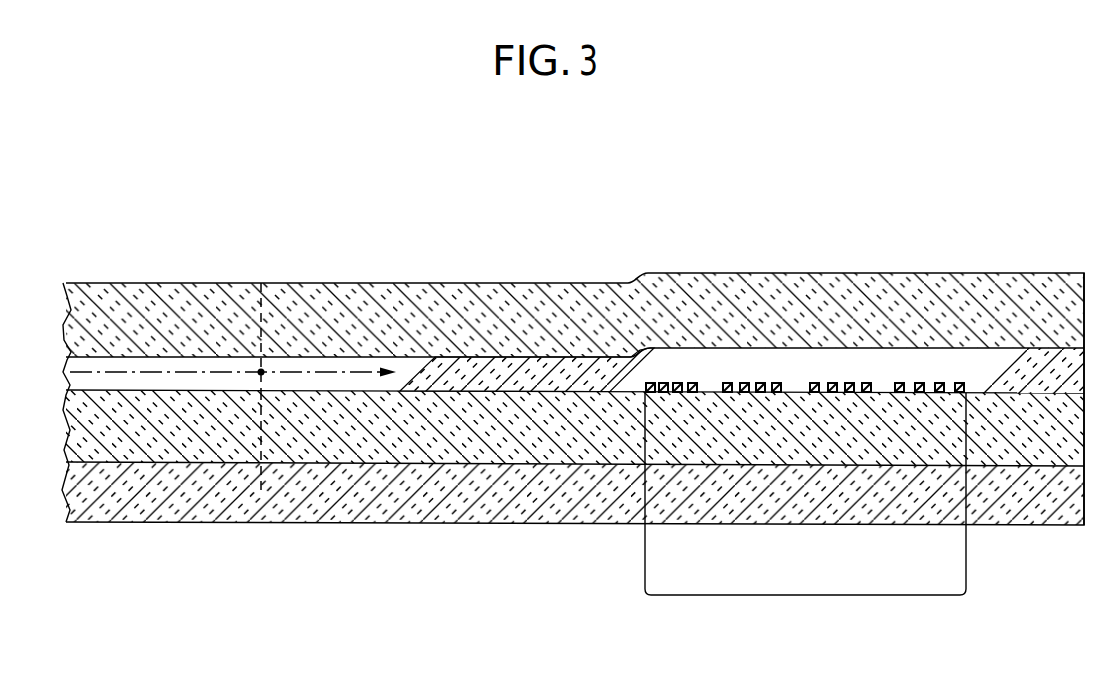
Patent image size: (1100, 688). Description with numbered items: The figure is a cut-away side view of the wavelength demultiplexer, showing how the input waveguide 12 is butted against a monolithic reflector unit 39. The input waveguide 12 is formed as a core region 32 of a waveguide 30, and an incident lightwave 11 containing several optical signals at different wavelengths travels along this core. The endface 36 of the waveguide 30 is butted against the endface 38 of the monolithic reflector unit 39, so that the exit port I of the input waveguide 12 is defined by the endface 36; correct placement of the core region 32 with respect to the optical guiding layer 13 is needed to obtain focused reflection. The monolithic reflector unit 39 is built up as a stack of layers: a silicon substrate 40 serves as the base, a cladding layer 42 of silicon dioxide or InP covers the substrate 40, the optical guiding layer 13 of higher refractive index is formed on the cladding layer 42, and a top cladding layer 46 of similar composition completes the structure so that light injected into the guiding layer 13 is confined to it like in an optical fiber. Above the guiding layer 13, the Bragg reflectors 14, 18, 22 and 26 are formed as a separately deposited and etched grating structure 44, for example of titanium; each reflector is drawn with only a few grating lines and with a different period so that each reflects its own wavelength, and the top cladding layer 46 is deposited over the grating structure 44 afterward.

The input waveguide 12 is at (511, 172).
The waveguide 30 is at (121, 290).
The top cladding layer 46 is at (990, 290).
The incident lightwave 11 is at (66, 372).
The core region 32 is at (72, 362).
The optical guiding layer 13 is at (497, 372).
The endface of monolithic reflector unit 38 is at (262, 303).
The endface of waveguide 36 is at (262, 483).
The exit port I is at (262, 371).
The first elliptical Bragg reflector 14 is at (646, 374).
The elliptical Bragg reflector 18 is at (721, 374).
The elliptical Bragg reflector 22 is at (873, 376).
The elliptical Bragg reflector 26 is at (893, 376).
The grating structure 44 is at (812, 595).
The monolithic reflector unit 39 is at (515, 500).
The silicon substrate 40 is at (1020, 505).
The cladding layer 42 is at (1066, 448).